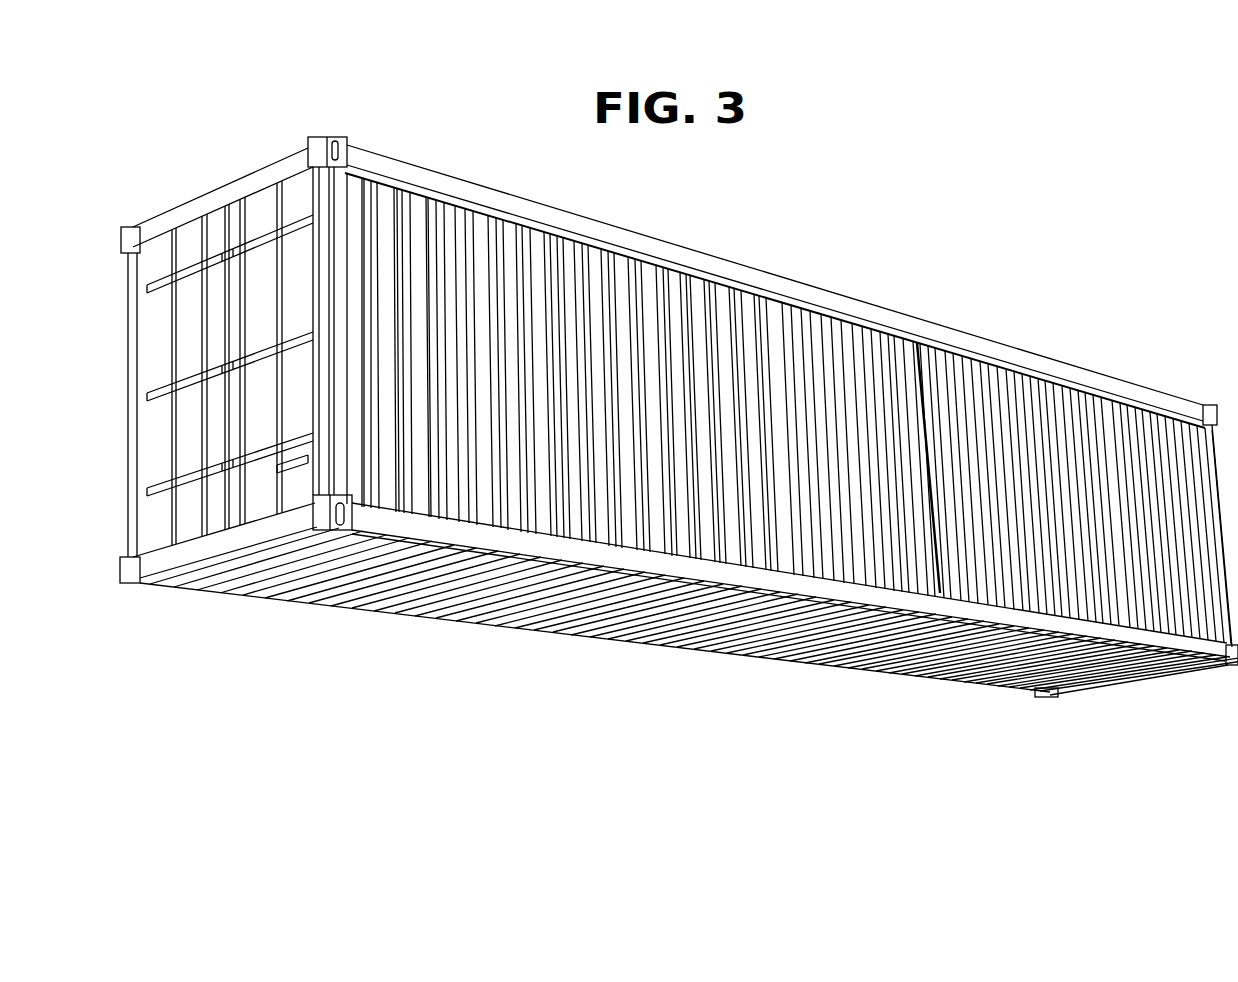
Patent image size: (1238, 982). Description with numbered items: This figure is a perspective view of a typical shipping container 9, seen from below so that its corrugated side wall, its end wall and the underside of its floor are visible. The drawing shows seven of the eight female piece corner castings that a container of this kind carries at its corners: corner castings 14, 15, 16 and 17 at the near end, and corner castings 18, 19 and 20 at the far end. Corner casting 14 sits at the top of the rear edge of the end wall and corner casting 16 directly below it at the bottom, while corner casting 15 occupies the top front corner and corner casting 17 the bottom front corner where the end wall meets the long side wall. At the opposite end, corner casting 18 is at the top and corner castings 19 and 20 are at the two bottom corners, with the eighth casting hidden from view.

The container 9 is at (883, 422).
The female piece corner casting 14 is at (126, 226).
The female piece corner casting 15 is at (323, 138).
The female piece corner casting 16 is at (137, 587).
The female piece corner casting 17 is at (337, 531).
The female piece corner casting 18 is at (1208, 407).
The female piece corner casting 19 is at (1045, 698).
The female piece corner casting 20 is at (1230, 668).